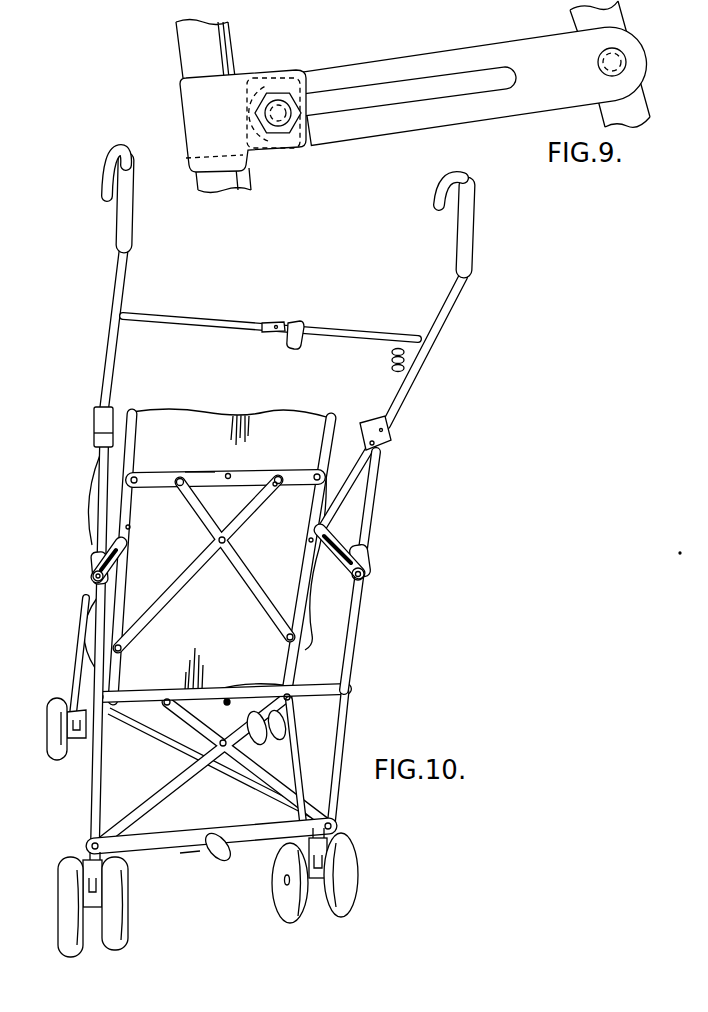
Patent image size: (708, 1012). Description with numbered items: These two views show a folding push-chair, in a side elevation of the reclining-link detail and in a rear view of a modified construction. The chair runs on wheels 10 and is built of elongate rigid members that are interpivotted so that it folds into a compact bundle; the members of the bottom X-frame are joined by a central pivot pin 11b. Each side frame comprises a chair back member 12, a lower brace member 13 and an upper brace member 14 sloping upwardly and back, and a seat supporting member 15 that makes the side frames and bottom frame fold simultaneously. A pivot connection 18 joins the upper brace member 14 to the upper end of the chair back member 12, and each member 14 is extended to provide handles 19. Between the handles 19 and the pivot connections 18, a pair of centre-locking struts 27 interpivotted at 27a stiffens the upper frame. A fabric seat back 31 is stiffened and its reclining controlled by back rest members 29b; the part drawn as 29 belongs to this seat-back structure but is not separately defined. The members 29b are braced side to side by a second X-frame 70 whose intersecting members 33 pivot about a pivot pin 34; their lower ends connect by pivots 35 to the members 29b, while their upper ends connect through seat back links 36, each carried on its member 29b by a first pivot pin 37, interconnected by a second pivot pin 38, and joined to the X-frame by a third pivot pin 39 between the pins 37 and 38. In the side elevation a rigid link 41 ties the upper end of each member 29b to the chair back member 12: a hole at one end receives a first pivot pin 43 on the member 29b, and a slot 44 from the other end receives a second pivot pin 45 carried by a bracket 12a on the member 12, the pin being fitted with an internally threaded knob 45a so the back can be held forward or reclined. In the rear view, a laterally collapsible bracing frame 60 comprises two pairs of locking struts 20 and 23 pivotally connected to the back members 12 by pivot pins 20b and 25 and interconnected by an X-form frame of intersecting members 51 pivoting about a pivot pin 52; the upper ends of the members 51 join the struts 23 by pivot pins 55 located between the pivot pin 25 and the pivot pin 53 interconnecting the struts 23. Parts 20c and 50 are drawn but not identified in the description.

In FIG. 10, the wheels 10 is at (56, 748).
In FIG. 10, the central pivot pin 11b is at (188, 740).
In FIG. 9, the chair back member 12 is at (187, 45).
In FIG. 10, the chair back member 12 is at (100, 508).
In FIG. 9, the bracket 12a is at (203, 127).
In FIG. 10, the bracket 12a is at (95, 560).
In FIG. 10, the lower brace member 13 is at (76, 665).
In FIG. 10, the upper brace member 14 is at (113, 358).
In FIG. 10, the seat supporting member 15 is at (306, 770).
In FIG. 10, the pivot connection 18 is at (97, 440).
In FIG. 10, the handles 19 is at (129, 195).
In FIG. 10, the locking strut 20 is at (177, 846).
In FIG. 10, the pivot pin 20b is at (91, 844).
In FIG. 10, the foot peg 20c is at (227, 860).
In FIG. 10, the locking strut 23 is at (120, 704).
In FIG. 10, the pivot pin 25 is at (97, 696).
In FIG. 10, the centre-locking strut 27 is at (213, 316).
In FIG. 10, the pivot 27a is at (283, 325).
In FIG. 10, the seat frame strut 29 is at (123, 603).
In FIG. 9, the back rest member 29b is at (597, 22).
In FIG. 10, the fabric seat back 31 is at (271, 424).
In FIG. 10, the intersecting member 33 is at (253, 589).
In FIG. 10, the pivot pin 34 is at (232, 541).
In FIG. 10, the pivot 35 is at (126, 648).
In FIG. 10, the seat back link 36 is at (152, 474).
In FIG. 10, the first pivot pin 37 is at (180, 487).
In FIG. 10, the second pivot pin 38 is at (227, 472).
In FIG. 10, the third pivot pin 39 is at (275, 486).
In FIG. 9, the rigid link 41 is at (405, 125).
In FIG. 10, the rigid link 41 is at (98, 562).
In FIG. 9, the first pivot pin 43 is at (603, 73).
In FIG. 9, the slot 44 is at (368, 98).
In FIG. 10, the slot 44 is at (118, 552).
In FIG. 9, the second pivot pin 45 is at (285, 131).
In FIG. 10, the second pivot pin 45 is at (96, 574).
In FIG. 9, the knob 45a is at (281, 98).
In FIG. 10, the rear leg 50 is at (345, 712).
In FIG. 10, the intersecting member 51 is at (163, 792).
In FIG. 10, the pivot pin 52 is at (222, 748).
In FIG. 10, the pivot pin 53 is at (226, 699).
In FIG. 10, the pivot pin 55 is at (165, 698).
In FIG. 10, the laterally collapsible bracing frame 60 is at (188, 855).
In FIG. 10, the second X-frame 70 is at (195, 470).